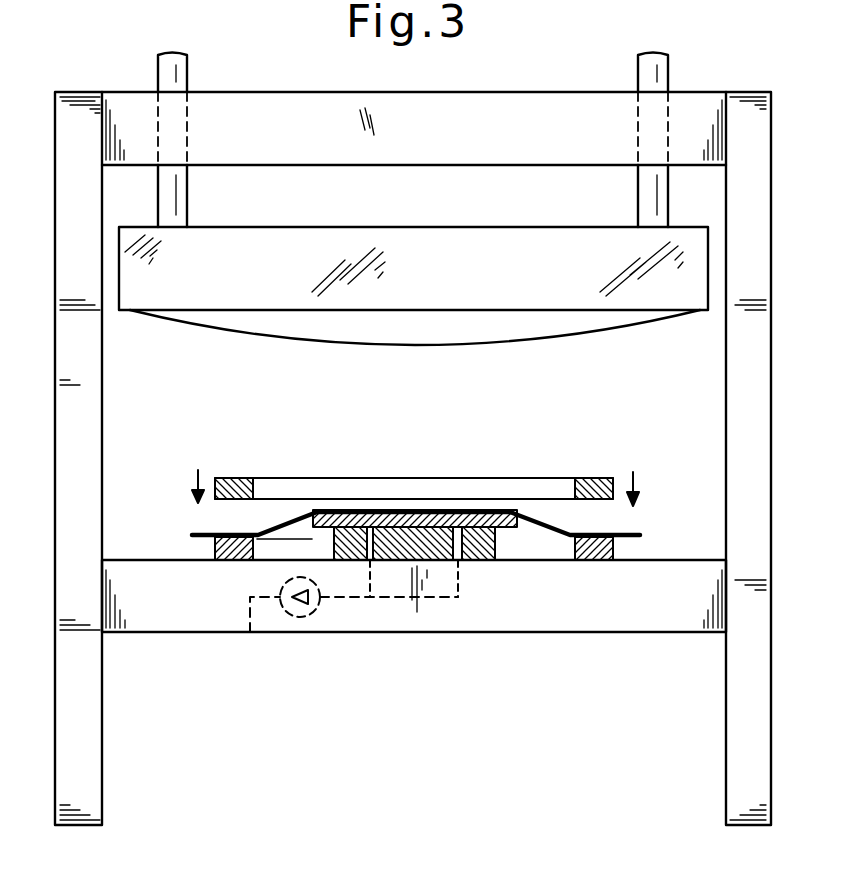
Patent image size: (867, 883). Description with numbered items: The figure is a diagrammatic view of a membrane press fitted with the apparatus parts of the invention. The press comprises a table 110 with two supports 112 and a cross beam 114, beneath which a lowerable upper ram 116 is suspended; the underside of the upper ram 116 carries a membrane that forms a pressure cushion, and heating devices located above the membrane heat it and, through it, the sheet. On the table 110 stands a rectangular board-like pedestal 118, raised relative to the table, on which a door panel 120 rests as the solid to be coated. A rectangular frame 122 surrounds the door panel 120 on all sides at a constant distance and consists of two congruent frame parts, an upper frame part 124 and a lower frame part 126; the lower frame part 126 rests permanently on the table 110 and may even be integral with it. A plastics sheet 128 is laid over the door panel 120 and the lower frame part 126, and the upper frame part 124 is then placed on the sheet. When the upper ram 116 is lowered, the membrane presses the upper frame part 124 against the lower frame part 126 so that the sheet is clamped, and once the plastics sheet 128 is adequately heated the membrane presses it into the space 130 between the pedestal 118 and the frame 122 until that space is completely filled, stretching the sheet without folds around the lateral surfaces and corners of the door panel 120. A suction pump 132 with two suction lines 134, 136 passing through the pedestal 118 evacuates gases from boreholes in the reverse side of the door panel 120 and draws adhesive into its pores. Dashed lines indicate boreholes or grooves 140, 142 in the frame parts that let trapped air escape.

The table 110 is at (168, 612).
The supports 112 is at (102, 732).
The cross beam 114 is at (548, 110).
The upper ram 116 is at (486, 246).
The pedestal 118 is at (333, 542).
The door panel 120 is at (518, 534).
The frame 122 is at (592, 470).
The upper frame part 124 is at (604, 479).
The lower frame part 126 is at (612, 541).
The plastics sheet 128 is at (296, 509).
The space between pedestal and frame 130 is at (575, 540).
The suction pump 132 is at (290, 616).
The suction line 134 is at (362, 602).
The suction line 136 is at (466, 580).
The boreholes or grooves 140 is at (232, 478).
The boreholes or grooves 142 is at (213, 547).